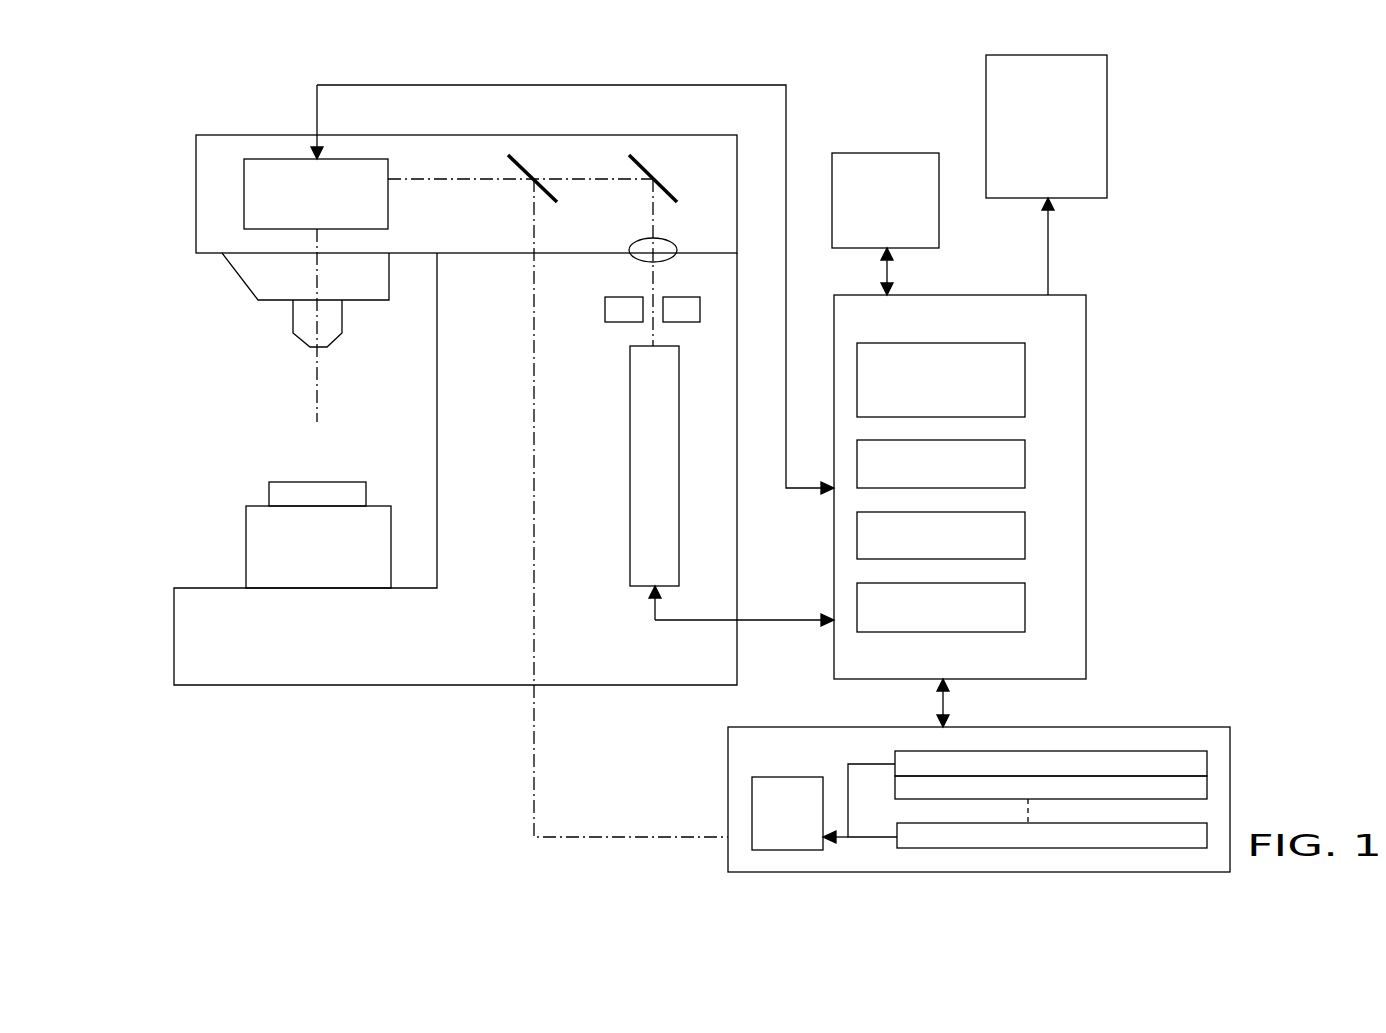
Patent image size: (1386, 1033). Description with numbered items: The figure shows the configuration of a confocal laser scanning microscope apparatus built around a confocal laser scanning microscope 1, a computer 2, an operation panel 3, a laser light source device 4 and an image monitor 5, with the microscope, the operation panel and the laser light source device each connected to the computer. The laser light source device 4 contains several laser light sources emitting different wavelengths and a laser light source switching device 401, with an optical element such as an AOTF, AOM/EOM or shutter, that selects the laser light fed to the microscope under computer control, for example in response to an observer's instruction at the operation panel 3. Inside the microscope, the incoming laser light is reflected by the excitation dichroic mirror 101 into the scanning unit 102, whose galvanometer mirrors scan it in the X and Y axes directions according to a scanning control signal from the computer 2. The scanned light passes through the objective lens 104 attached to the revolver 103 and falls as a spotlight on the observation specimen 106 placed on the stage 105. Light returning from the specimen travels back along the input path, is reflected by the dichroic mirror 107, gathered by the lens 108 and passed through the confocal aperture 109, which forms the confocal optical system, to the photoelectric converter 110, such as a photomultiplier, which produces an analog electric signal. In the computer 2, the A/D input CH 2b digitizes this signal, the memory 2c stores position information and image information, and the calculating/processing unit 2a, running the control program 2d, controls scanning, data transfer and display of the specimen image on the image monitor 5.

The confocal laser scanning microscope 1 is at (250, 135).
The computer 2 is at (1086, 470).
The calculating/processing unit 2a is at (1027, 370).
The A/D input CH 2b is at (1027, 458).
The memory 2c is at (1027, 528).
The control program 2d is at (1027, 600).
The operation panel 3 is at (860, 153).
The laser light source device 4 is at (1118, 727).
The image monitor 5 is at (1107, 124).
The excitation dichroic mirror 101 is at (530, 169).
The scanning unit 102 is at (388, 218).
The revolver 103 is at (237, 277).
The objective lens 104 is at (293, 318).
The stage 105 is at (246, 528).
The observation specimen 106 is at (366, 496).
The dichroic mirror 107 is at (643, 163).
The lens 108 is at (667, 240).
The confocal aperture 109 is at (628, 296).
The photoelectric converter 110 is at (630, 432).
The laser light source switching device 401 is at (805, 777).